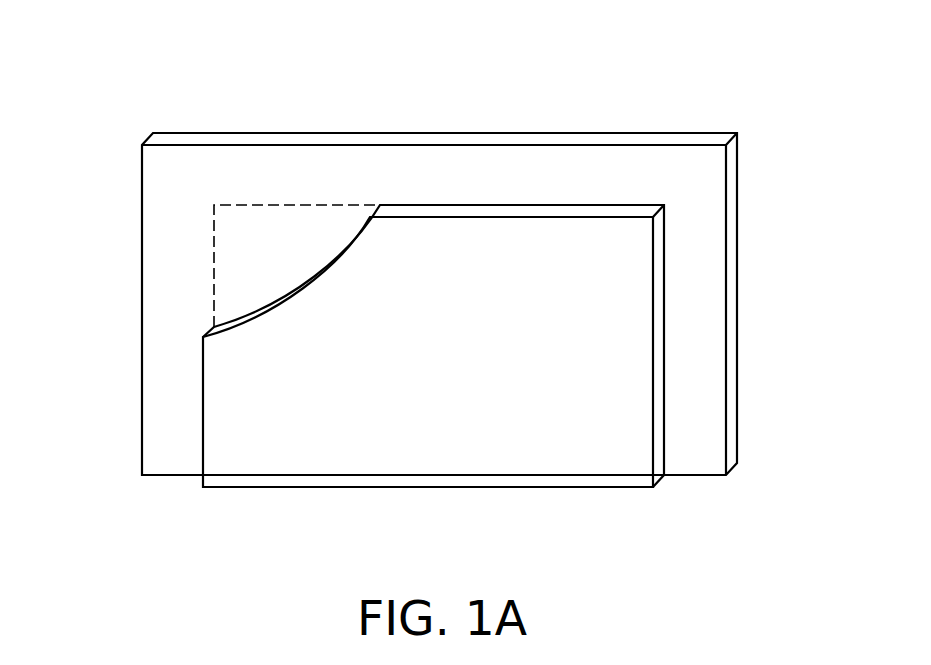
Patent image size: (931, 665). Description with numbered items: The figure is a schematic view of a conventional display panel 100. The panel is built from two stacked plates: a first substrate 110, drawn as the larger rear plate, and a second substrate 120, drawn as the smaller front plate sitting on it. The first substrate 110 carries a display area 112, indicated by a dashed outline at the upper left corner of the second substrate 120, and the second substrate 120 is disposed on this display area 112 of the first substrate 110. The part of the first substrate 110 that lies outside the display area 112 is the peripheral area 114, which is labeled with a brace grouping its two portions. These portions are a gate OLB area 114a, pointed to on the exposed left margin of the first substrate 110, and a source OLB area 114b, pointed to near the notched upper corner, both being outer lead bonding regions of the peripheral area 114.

The conventional display panel 100 is at (748, 547).
The first substrate 110 is at (733, 322).
The display area 112 is at (310, 205).
The peripheral area 114 is at (170, 44).
The gate OLB area 114a is at (178, 325).
The source OLB area 114b is at (252, 197).
The second substrate 120 is at (658, 410).